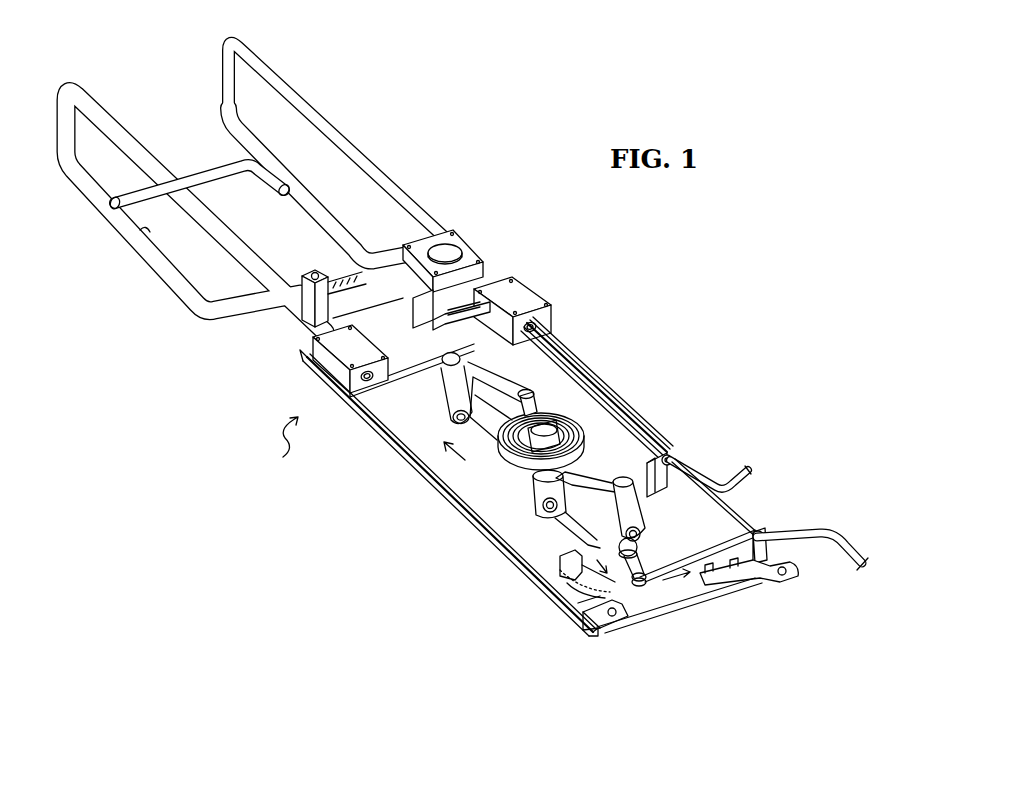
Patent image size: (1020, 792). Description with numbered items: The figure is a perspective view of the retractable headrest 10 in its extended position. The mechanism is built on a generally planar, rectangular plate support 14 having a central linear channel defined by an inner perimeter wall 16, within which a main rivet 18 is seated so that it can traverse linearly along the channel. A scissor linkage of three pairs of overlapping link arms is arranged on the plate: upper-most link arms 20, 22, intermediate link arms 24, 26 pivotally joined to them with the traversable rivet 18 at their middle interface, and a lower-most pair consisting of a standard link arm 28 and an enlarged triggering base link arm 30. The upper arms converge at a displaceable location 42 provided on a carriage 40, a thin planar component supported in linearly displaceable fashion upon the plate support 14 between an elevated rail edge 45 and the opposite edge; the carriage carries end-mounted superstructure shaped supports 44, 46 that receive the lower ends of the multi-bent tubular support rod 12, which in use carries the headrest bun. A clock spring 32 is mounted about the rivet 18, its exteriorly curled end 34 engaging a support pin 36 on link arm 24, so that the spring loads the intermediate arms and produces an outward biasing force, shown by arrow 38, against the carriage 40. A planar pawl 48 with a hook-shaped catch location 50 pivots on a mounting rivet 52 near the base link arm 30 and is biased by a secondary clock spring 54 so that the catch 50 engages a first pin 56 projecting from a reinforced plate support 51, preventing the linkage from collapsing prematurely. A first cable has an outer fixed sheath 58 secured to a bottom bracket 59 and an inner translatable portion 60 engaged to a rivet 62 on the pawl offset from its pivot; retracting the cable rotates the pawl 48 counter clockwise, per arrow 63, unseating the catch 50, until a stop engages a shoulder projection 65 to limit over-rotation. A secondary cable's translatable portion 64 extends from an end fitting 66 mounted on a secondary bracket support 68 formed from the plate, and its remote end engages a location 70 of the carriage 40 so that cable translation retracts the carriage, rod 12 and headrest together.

The retractable headrest 10 is at (281, 441).
The support rod 12 is at (307, 113).
The plate support 14 is at (617, 446).
The inner perimeter wall 16 is at (483, 403).
The main rivet 18 is at (550, 431).
The upper-most link arm 20 is at (490, 378).
The upper-most link arm 22 is at (448, 393).
The intermediate link arm 24 is at (533, 477).
The intermediate link arm 26 is at (600, 467).
The link arm 28 is at (633, 507).
The base link arm 30 is at (580, 537).
The clock spring 32 is at (575, 425).
The curled end 34 is at (552, 407).
The support pin 36 is at (552, 407).
The arrow 38 is at (457, 457).
The carriage 40 is at (393, 337).
The displaceable location 42 is at (443, 357).
The superstructure shaped support 44 is at (330, 352).
The elevated rail edge 45 is at (393, 447).
The superstructure shaped support 46 is at (523, 290).
The pawl 48 is at (570, 583).
The catch location 50 is at (550, 580).
The plate support 51 is at (557, 570).
The mounting rivet 52 is at (637, 568).
The secondary clock spring 54 is at (640, 553).
The first pin 56 is at (587, 540).
The outer fixed sheath 58 is at (803, 523).
The bottom bracket 59 is at (730, 573).
The inner translatable portion 60 is at (720, 547).
The rivet 62 is at (670, 598).
The arrow 63 is at (580, 603).
The translatable cable portion 64 is at (657, 457).
The shoulder projection 65 is at (667, 563).
The end fitting 66 is at (737, 480).
The secondary bracket support 68 is at (675, 458).
The carriage location 70 is at (552, 318).